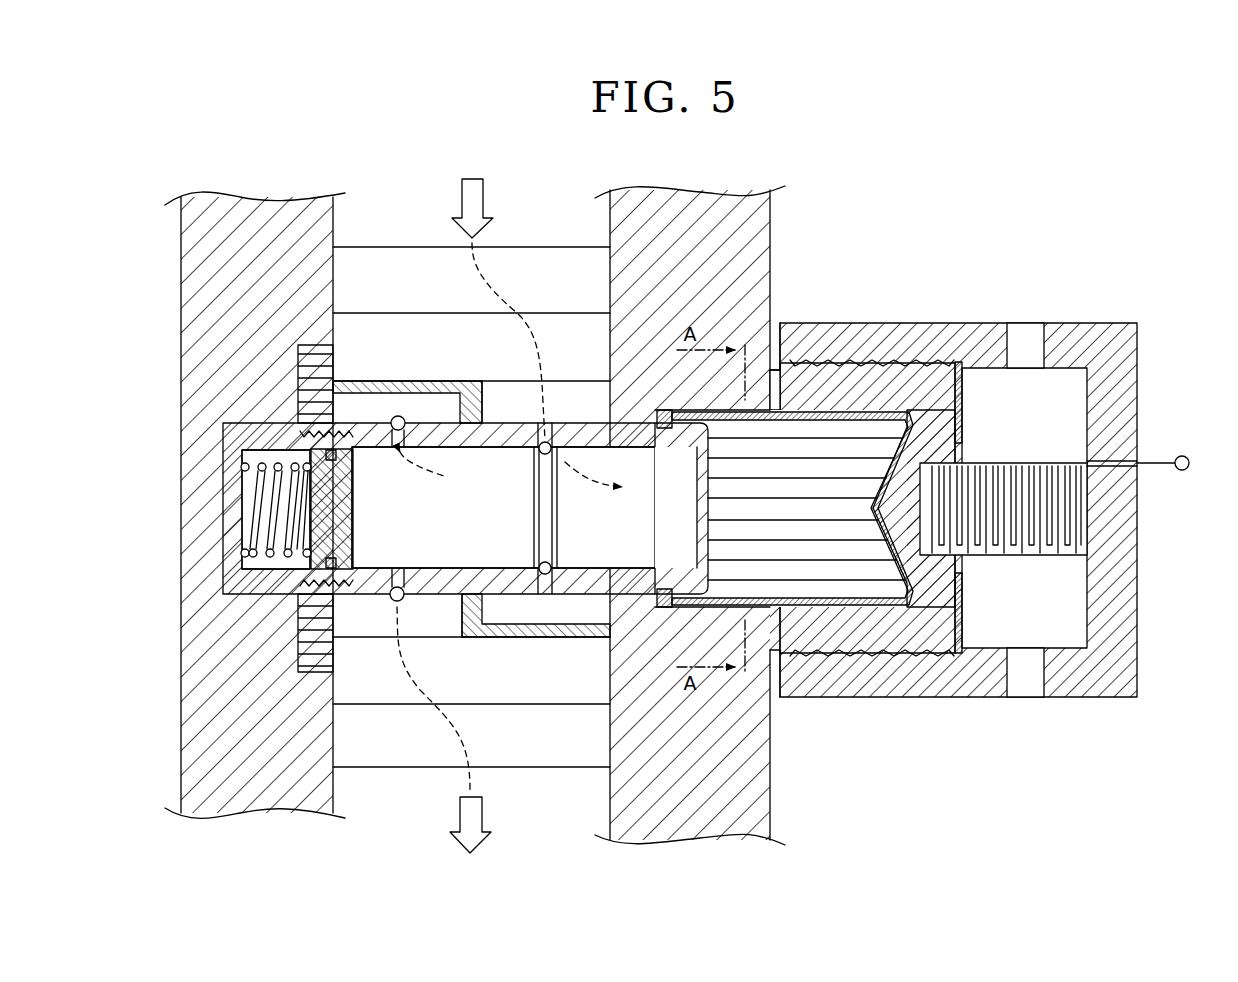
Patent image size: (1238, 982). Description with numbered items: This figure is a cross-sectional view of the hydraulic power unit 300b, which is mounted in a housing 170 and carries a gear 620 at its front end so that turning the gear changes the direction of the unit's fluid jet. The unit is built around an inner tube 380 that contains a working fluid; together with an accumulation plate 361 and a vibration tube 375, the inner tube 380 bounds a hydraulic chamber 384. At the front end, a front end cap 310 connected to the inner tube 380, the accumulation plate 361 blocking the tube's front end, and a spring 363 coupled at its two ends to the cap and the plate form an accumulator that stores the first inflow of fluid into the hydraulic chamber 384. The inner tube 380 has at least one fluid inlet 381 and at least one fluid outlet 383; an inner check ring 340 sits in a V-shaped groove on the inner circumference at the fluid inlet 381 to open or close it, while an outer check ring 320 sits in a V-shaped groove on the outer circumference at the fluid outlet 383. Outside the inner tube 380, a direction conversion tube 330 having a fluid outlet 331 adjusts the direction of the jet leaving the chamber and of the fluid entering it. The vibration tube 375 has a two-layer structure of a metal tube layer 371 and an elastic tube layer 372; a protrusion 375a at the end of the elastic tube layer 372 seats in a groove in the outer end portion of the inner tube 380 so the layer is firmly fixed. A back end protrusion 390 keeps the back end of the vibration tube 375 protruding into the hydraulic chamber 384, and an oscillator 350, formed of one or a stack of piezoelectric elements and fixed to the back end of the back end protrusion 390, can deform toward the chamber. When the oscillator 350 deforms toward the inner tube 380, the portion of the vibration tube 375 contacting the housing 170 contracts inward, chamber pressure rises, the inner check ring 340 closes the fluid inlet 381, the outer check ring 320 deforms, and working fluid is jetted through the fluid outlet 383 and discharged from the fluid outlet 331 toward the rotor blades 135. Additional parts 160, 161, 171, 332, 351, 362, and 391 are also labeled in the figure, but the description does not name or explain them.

The rotor blades 135 is at (532, 756).
The actuator housing block 160 is at (1130, 343).
The housing passage 161 is at (1025, 335).
The housing 170 is at (192, 249).
The slot 171 is at (780, 390).
The hydraulic power unit 300b is at (354, 852).
The front end cap 310 is at (242, 420).
The outer check ring 320 is at (400, 414).
The direction conversion tube 330 is at (372, 383).
The fluid outlet 331 is at (367, 602).
The lower cavity 332 is at (525, 614).
The inner check ring 340 is at (548, 592).
The oscillator 350 is at (1034, 556).
The lead wire 351 is at (1185, 455).
The accumulation plate 361 is at (342, 487).
The spring chamber 362 is at (242, 455).
The spring 363 is at (256, 503).
The metal tube layer 371 is at (870, 607).
The elastic tube layer 372 is at (820, 607).
The vibration tube 375 is at (736, 523).
The protrusion 375a is at (660, 410).
The inner tube 380 is at (438, 596).
The fluid inlet 381 is at (558, 420).
The fluid outlet 383 is at (455, 408).
The hydraulic chamber 384 is at (466, 517).
The back end protrusion 390 is at (935, 428).
The seal strip 391 is at (893, 380).
The gear 620 is at (300, 640).